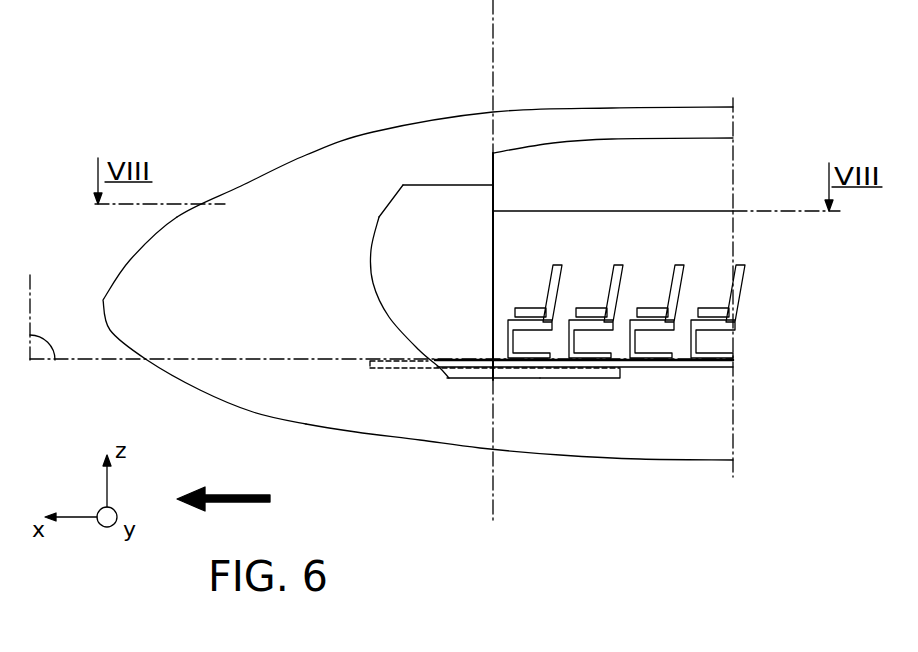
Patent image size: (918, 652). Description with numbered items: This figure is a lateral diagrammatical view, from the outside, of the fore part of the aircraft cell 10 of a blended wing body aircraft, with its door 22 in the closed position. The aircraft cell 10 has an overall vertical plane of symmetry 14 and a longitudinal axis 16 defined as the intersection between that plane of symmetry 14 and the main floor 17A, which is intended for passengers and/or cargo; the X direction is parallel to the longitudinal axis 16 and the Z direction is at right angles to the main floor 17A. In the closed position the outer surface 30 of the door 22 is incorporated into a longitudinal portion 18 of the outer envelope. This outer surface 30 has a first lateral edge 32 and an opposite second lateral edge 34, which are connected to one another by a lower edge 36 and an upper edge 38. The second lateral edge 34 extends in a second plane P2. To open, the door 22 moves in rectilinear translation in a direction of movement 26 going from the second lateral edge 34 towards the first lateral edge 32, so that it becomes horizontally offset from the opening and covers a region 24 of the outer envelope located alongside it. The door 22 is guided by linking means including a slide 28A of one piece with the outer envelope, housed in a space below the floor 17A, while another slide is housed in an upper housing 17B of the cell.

The aircraft cell 10 is at (229, 78).
The overall vertical plane of symmetry 14 is at (43, 352).
The longitudinal axis 16 is at (110, 360).
The main floor 17A is at (704, 369).
The upper housing 17B is at (645, 137).
The longitudinal portion of the outer envelope 18 is at (382, 428).
The door 22 is at (447, 390).
The region of the outer envelope 24 is at (341, 267).
The direction of movement 26 is at (232, 494).
The slide 28A is at (600, 380).
The outer surface of the door 30 is at (421, 222).
The first lateral edge 32 is at (378, 215).
The second lateral edge 34 is at (496, 240).
The lower edge 36 is at (477, 379).
The upper edge 38 is at (453, 185).
The second plane P2 is at (494, 33).